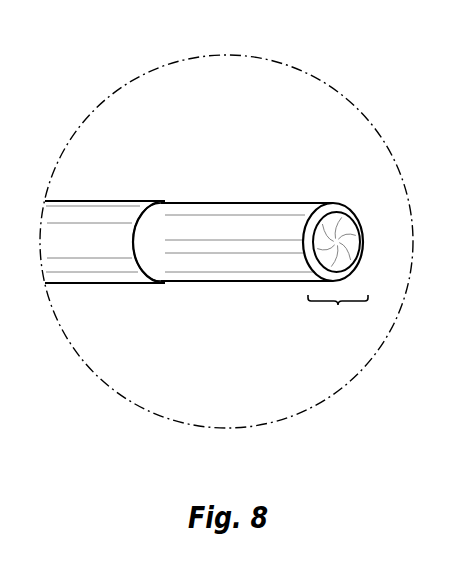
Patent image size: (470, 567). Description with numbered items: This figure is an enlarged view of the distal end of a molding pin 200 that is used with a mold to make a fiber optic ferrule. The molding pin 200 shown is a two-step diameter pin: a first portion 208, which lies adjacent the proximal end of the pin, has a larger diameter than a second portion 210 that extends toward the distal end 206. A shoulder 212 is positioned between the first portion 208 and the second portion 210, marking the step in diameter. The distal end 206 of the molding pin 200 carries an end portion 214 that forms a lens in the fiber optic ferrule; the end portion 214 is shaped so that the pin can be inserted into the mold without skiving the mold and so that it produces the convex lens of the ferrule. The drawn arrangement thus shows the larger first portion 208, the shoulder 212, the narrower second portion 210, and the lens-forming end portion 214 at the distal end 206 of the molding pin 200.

The molding pin 200 is at (303, 118).
The distal end 206 is at (350, 201).
The first portion 208 is at (107, 200).
The second portion 210 is at (246, 202).
The shoulder 212 is at (168, 200).
The end portion 214 is at (338, 316).